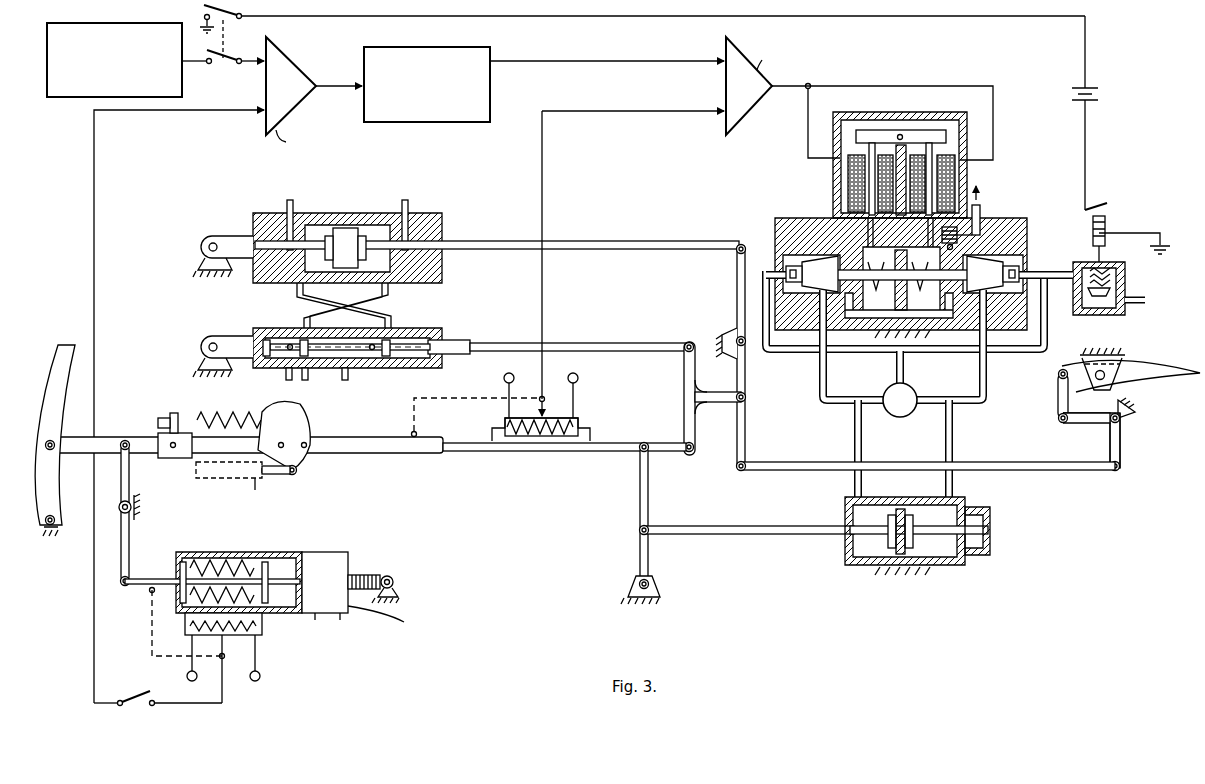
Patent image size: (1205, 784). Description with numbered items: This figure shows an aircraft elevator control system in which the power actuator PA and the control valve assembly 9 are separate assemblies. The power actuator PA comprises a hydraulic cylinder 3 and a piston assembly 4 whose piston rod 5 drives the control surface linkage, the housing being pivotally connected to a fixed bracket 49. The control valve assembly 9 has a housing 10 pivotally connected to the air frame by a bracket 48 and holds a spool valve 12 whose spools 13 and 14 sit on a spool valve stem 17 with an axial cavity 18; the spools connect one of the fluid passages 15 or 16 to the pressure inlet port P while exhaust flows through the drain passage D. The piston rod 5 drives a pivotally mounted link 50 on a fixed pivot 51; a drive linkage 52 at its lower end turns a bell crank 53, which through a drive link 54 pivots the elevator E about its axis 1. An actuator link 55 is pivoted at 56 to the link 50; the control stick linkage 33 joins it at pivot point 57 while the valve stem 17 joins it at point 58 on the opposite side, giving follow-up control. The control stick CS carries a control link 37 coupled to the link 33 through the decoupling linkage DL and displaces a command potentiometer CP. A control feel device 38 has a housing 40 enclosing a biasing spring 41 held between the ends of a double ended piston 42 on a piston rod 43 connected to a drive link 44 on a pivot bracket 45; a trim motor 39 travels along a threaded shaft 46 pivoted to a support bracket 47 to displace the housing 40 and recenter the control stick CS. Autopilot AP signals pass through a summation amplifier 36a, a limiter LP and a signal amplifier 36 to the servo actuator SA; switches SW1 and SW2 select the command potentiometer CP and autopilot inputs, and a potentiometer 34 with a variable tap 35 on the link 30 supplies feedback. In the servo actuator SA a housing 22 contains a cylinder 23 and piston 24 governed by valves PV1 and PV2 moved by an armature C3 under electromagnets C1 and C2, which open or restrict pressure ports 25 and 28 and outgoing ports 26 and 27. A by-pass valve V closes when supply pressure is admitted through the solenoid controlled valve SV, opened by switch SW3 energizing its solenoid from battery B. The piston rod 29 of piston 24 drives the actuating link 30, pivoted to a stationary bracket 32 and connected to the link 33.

The torque tube 1 is at (1100, 381).
The hydraulic cylinder 3 is at (378, 224).
The piston assembly 4 is at (345, 228).
The piston rod 5 is at (660, 238).
The control valve assembly 9 is at (456, 323).
The housing 10 is at (380, 359).
The spool valve 12 is at (450, 360).
The spool 13 is at (390, 357).
The spool 14 is at (305, 358).
The fluid passage 15 is at (390, 321).
The fluid passage 16 is at (300, 321).
The spool valve stem 17 is at (598, 343).
The axial cavity 18 is at (368, 338).
The housing 22 is at (950, 565).
The cylinder 23 is at (858, 565).
The piston 24 is at (900, 557).
The pressure port 25 is at (804, 292).
The outgoing pressure port 26 is at (832, 260).
The outgoing port 27 is at (993, 258).
The pressure port 28 is at (1003, 292).
The piston rod 29 is at (708, 526).
The actuating link 30 is at (640, 498).
The stationary bracket 32 is at (657, 594).
The control link 33 is at (610, 443).
The potentiometer 34 is at (492, 434).
The variable tap 35 is at (545, 401).
The mixer and amplifier 36 is at (753, 118).
The summation amplifier 36a is at (287, 63).
The control link 37 is at (365, 437).
The control feel device 38 is at (318, 544).
The trim motor 39 is at (340, 552).
The housing 40 is at (246, 553).
The biasing spring 41 is at (200, 553).
The double ended piston 42 is at (180, 575).
The piston rod 43 is at (141, 585).
The drive link 44 is at (130, 478).
The pivot bracket 45 is at (134, 515).
The threaded shaft 46 is at (365, 575).
The air frame support bracket 47 is at (397, 595).
The bracket 48 is at (199, 353).
The fixed bracket 49 is at (199, 253).
The pivotally mounted link 50 is at (737, 292).
The fixed pivot 51 is at (726, 334).
The drive linkage 52 is at (777, 470).
The bell crank 53 is at (1122, 452).
The drive link 54 is at (1058, 407).
The actuator link 55 is at (704, 412).
The pivot 56 is at (747, 397).
The pivot point 57 is at (695, 461).
The point 58 is at (684, 358).
The autopilot system AP is at (78, 99).
The autopilot control signal limiter LP is at (490, 61).
The source battery B is at (1076, 97).
The electromagnet C1 is at (848, 177).
The electromagnet C2 is at (955, 176).
The armature C3 is at (922, 130).
The servo actuator SA is at (1060, 235).
The valve PV1 is at (781, 266).
The valve PV2 is at (1027, 264).
The solenoid controlled valve SV is at (1122, 312).
The by-pass valve V is at (903, 393).
The elevator E is at (1158, 364).
The control stick CS is at (70, 400).
The decoupling linkage assembly DL is at (312, 466).
The drain passage D is at (288, 380).
The pressure inlet port P is at (345, 380).
The hydraulic power actuator PA is at (266, 208).
The command potentiometer CP is at (185, 630).
The switch SW1 is at (158, 710).
The switch SW2 is at (236, 53).
The switch SW3 is at (642, 21).